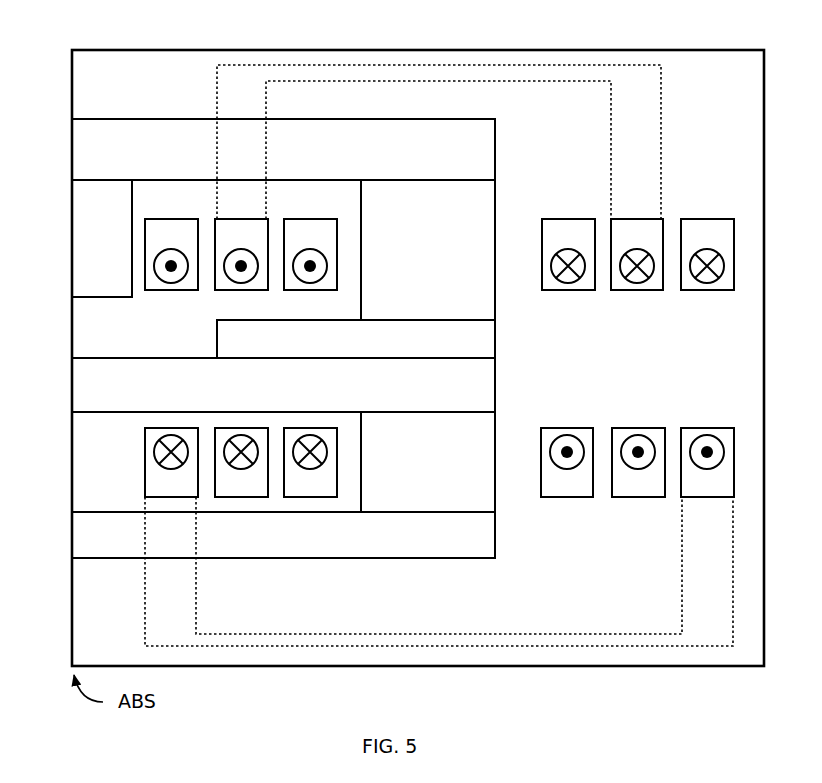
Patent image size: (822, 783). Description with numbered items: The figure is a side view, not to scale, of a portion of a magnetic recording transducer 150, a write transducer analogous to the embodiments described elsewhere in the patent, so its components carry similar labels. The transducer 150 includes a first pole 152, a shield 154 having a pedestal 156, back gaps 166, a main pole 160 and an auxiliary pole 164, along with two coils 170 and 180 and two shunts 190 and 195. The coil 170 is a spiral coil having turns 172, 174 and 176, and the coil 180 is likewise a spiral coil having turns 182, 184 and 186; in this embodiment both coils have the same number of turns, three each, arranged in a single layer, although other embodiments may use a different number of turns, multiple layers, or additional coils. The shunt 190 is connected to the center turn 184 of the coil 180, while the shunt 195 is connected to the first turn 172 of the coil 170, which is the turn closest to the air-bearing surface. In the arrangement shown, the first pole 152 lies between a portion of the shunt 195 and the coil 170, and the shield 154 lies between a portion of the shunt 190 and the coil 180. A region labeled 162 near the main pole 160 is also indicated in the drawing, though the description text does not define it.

The magnetic recording transducer 150 is at (415, 31).
The first pole 152 is at (283, 535).
The shield 154 is at (283, 149).
The pedestal 156 is at (102, 238).
The main pole 160 is at (283, 385).
The write gap region 162 is at (108, 342).
The auxiliary pole 164 is at (356, 339).
The back gaps 166 is at (428, 346).
The coil 170 is at (672, 514).
The first turn 172 is at (439, 462).
The turn 174 is at (440, 462).
The turn 176 is at (438, 462).
The coil 180 is at (302, 205).
The turn 182 is at (439, 254).
The center turn 184 is at (439, 254).
The turn 186 is at (439, 254).
The shunt 190 is at (439, 142).
The shunt 195 is at (439, 571).